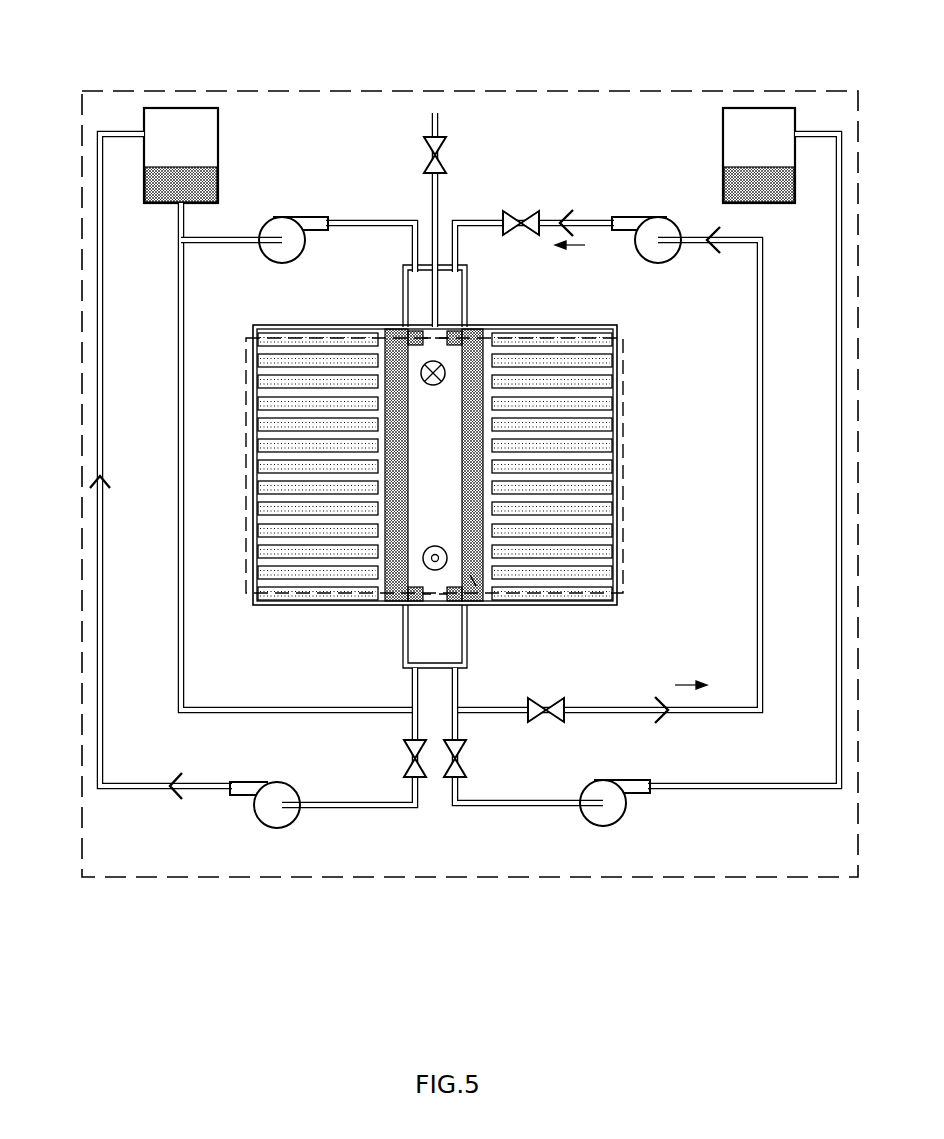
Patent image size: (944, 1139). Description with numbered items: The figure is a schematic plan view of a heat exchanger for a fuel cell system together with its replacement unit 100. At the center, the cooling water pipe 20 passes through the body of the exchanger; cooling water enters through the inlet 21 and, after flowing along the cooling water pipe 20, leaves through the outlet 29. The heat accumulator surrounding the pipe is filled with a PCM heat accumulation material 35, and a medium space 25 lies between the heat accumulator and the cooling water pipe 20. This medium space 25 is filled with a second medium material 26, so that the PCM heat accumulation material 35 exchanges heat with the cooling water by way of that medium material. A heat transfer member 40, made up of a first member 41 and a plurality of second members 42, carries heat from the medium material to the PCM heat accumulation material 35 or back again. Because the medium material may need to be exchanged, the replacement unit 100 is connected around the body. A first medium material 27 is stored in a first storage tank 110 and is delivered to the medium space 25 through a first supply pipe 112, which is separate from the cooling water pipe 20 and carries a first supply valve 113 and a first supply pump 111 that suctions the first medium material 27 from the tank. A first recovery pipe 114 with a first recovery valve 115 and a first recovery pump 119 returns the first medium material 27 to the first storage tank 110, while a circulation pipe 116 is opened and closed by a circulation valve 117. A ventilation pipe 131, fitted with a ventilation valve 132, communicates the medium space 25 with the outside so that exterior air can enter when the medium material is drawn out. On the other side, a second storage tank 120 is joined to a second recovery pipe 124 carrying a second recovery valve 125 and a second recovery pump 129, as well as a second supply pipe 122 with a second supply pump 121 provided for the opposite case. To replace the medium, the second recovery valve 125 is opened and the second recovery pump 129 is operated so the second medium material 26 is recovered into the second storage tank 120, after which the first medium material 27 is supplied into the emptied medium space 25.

The replacement unit 100 is at (557, 88).
The first storage tank 110 is at (723, 133).
The first medium material 27 is at (723, 180).
The first supply pump 111 is at (651, 229).
The first supply pipe 112 is at (592, 217).
The first supply valve 113 is at (528, 212).
The ventilation pipe 131 is at (438, 122).
The ventilation valve 132 is at (426, 160).
The second storage tank 120 is at (218, 132).
The second medium material 26 is at (214, 180).
The second supply pump 121 is at (293, 229).
The second supply pipe 122 is at (346, 217).
The heat transfer member 40 is at (435, 427).
The first member 41 is at (463, 446).
The second members 42 is at (587, 352).
The PCM heat accumulation material 35 is at (607, 378).
The cooling water pipe 20 is at (432, 429).
The inlet 21 is at (420, 373).
The outlet 29 is at (421, 558).
The medium space 25 is at (475, 582).
The circulation pipe 116 is at (763, 615).
The circulation valve 117 is at (553, 699).
The second recovery pipe 124 is at (97, 703).
The second recovery valve 125 is at (402, 764).
The first recovery valve 115 is at (467, 765).
The second recovery pump 129 is at (277, 824).
The first recovery pump 119 is at (601, 818).
The first recovery pipe 114 is at (780, 792).